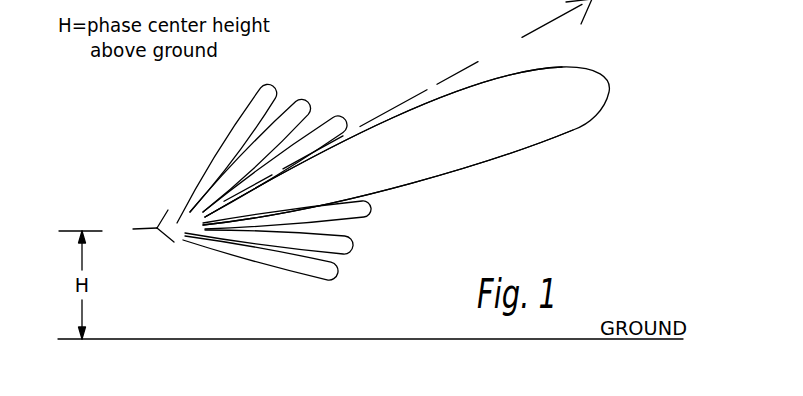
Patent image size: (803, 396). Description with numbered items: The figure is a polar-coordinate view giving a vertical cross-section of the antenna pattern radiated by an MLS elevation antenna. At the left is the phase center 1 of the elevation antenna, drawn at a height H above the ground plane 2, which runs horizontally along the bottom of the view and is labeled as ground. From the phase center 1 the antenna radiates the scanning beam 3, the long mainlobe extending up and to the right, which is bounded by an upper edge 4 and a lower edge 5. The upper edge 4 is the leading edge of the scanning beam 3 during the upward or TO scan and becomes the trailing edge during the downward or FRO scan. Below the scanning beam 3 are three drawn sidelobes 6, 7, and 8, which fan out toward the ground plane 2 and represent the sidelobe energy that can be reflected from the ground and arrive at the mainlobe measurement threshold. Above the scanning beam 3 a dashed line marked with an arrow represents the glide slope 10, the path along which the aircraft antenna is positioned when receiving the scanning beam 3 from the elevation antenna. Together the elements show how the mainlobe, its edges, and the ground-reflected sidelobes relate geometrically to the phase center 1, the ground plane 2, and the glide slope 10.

The phase center 1 is at (145, 226).
The ground plane 2 is at (215, 338).
The scanning beam 3 is at (473, 141).
The upper edge 4 is at (523, 68).
The lower edge 5 is at (573, 130).
The sidelobe 6 is at (374, 208).
The sidelobe 7 is at (355, 240).
The sidelobe 8 is at (340, 272).
The glide slope 10 is at (473, 63).